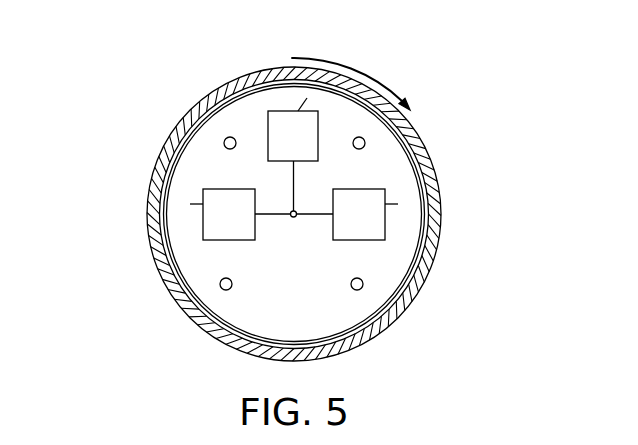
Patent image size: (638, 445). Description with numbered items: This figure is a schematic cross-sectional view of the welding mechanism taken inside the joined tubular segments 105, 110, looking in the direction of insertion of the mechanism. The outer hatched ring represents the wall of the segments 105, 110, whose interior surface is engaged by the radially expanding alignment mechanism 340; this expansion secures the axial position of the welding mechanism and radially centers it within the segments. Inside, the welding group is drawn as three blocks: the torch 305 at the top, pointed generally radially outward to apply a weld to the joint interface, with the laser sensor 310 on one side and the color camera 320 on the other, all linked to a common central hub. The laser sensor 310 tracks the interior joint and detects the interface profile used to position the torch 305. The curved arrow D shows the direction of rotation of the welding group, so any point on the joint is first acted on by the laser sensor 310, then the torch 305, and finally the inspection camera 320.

The segment 105 is at (163, 282).
The segment 110 is at (163, 282).
The torch 305 is at (280, 110).
The laser sensor 310 is at (384, 220).
The color camera 320 is at (202, 219).
The alignment mechanism 340 is at (384, 128).
The direction of rotation D is at (350, 66).